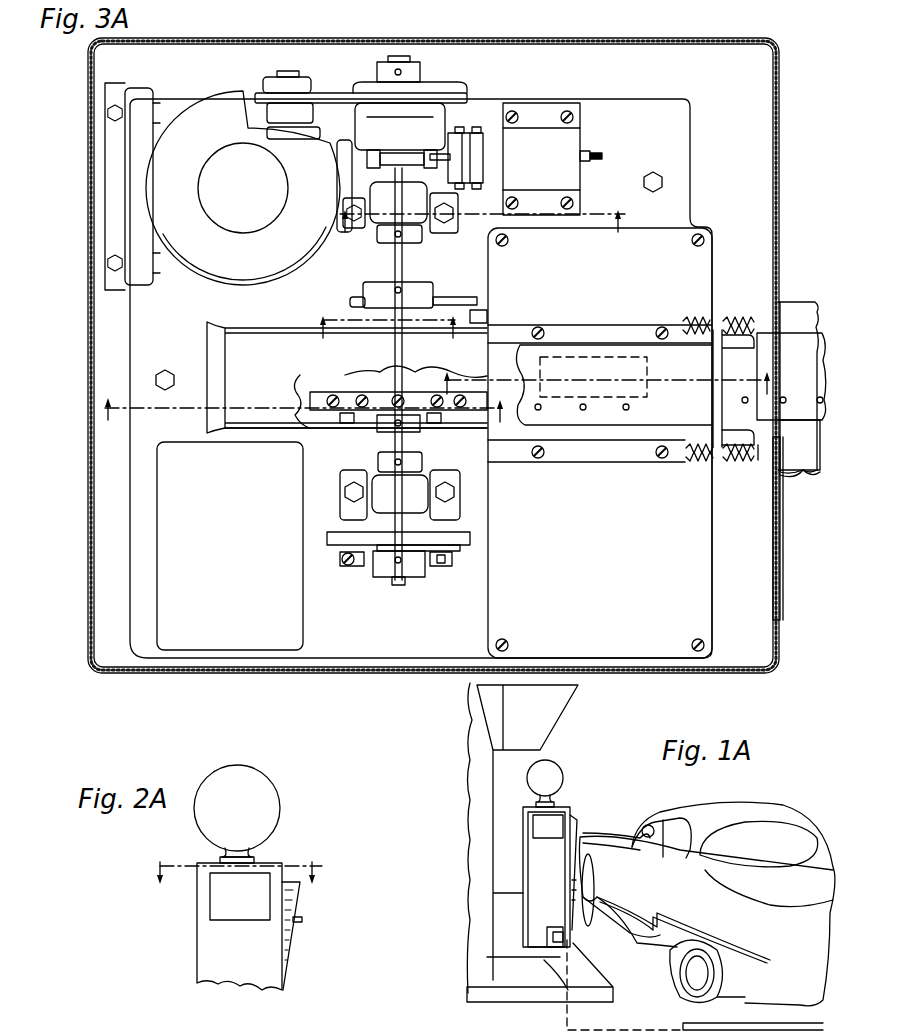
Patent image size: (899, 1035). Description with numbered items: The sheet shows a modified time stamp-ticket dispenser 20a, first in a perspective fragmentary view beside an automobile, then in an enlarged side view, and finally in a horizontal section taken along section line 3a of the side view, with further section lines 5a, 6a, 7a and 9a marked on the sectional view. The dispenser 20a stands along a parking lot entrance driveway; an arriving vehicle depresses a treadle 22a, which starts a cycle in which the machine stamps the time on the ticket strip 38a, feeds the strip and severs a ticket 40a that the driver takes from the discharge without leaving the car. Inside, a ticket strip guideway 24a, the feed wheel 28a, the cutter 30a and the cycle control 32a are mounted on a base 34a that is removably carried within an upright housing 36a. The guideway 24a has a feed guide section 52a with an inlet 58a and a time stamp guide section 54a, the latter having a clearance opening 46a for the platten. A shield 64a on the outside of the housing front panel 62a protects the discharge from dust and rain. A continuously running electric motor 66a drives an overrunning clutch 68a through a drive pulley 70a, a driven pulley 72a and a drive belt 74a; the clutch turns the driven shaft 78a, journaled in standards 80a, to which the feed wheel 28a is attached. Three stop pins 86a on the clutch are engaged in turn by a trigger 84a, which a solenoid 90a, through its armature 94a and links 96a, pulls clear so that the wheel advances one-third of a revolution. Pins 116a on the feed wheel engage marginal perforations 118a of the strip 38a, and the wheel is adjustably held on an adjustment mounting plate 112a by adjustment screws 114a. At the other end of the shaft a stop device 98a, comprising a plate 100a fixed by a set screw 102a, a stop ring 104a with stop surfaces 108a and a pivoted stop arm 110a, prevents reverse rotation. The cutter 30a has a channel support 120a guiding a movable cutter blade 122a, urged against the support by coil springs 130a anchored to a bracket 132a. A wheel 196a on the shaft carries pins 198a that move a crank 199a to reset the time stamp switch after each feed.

In FIG. 2A, the time stamp-ticket dispenser 20a is at (197, 942).
In FIG. 1A, the time stamp-ticket dispenser 20a is at (608, 799).
In FIG. 1A, the treadle 22a is at (693, 1023).
In FIG. 3A, the ticket strip guideway 24a is at (265, 322).
In FIG. 3A, the ticket feed wheel 28a is at (333, 390).
In FIG. 3A, the ticket cutter 30a is at (740, 362).
In FIG. 3A, the cycle control 32a is at (312, 626).
In FIG. 3A, the base 34a is at (432, 661).
In FIG. 3A, the housing 36a is at (378, 673).
In FIG. 3A, the ticket strip 38a is at (590, 428).
In FIG. 3A, the severed ticket 40a is at (798, 458).
In FIG. 2A, the severed ticket 40a is at (302, 920).
In FIG. 1A, the severed ticket 40a is at (580, 833).
In FIG. 3A, the clearance opening 46a is at (612, 356).
In FIG. 3A, the feed guide section 52a is at (278, 433).
In FIG. 3A, the time stamp guide section 54a is at (625, 325).
In FIG. 3A, the inlet 58a is at (207, 358).
In FIG. 3A, the housing front panel 62a is at (803, 470).
In FIG. 3A, the shield 64a is at (802, 302).
In FIG. 2A, the shield 64a is at (290, 945).
In FIG. 1A, the shield 64a is at (578, 823).
In FIG. 3A, the electric driving motor 66a is at (214, 268).
In FIG. 3A, the overrunning clutch 68a is at (440, 122).
In FIG. 3A, the drive pulley 70a is at (268, 86).
In FIG. 3A, the driven pulley 72a is at (425, 83).
In FIG. 3A, the drive belt 74a is at (320, 92).
In FIG. 3A, the driven shaft 78a is at (390, 258).
In FIG. 3A, the standards 80a is at (425, 235).
In FIG. 3A, the trigger 84a is at (470, 157).
In FIG. 3A, the stop pins 86a is at (373, 150).
In FIG. 3A, the solenoid 90a is at (572, 136).
In FIG. 3A, the armature 94a is at (483, 168).
In FIG. 3A, the links 96a is at (476, 129).
In FIG. 3A, the stop device 98a is at (403, 588).
In FIG. 3A, the plate 100a is at (470, 540).
In FIG. 3A, the set screw 102a is at (392, 568).
In FIG. 3A, the stop ring 104a is at (458, 560).
In FIG. 3A, the stop surfaces 108a is at (418, 539).
In FIG. 3A, the stop arm 110a is at (340, 558).
In FIG. 3A, the adjustment mounting plate 112a is at (420, 428).
In FIG. 3A, the adjustment screws 114a is at (445, 420).
In FIG. 3A, the pins 116a is at (370, 395).
In FIG. 3A, the marginal perforations 118a is at (783, 403).
In FIG. 3A, the channel support 120a is at (713, 438).
In FIG. 3A, the cutter blade 122a is at (713, 400).
In FIG. 3A, the coil springs 130a is at (733, 320).
In FIG. 3A, the bracket 132a is at (760, 452).
In FIG. 3A, the wheel 196a is at (430, 283).
In FIG. 3A, the pins 198a is at (354, 302).
In FIG. 3A, the crank 199a is at (487, 316).
In FIG. 2A, the section line 3a— 3a is at (235, 871).
In FIG. 3A, the section line 5a is at (491, 196).
In FIG. 3A, the section line 6a is at (386, 323).
In FIG. 3A, the section line 7a is at (310, 415).
In FIG. 3A, the section line 9a is at (610, 383).